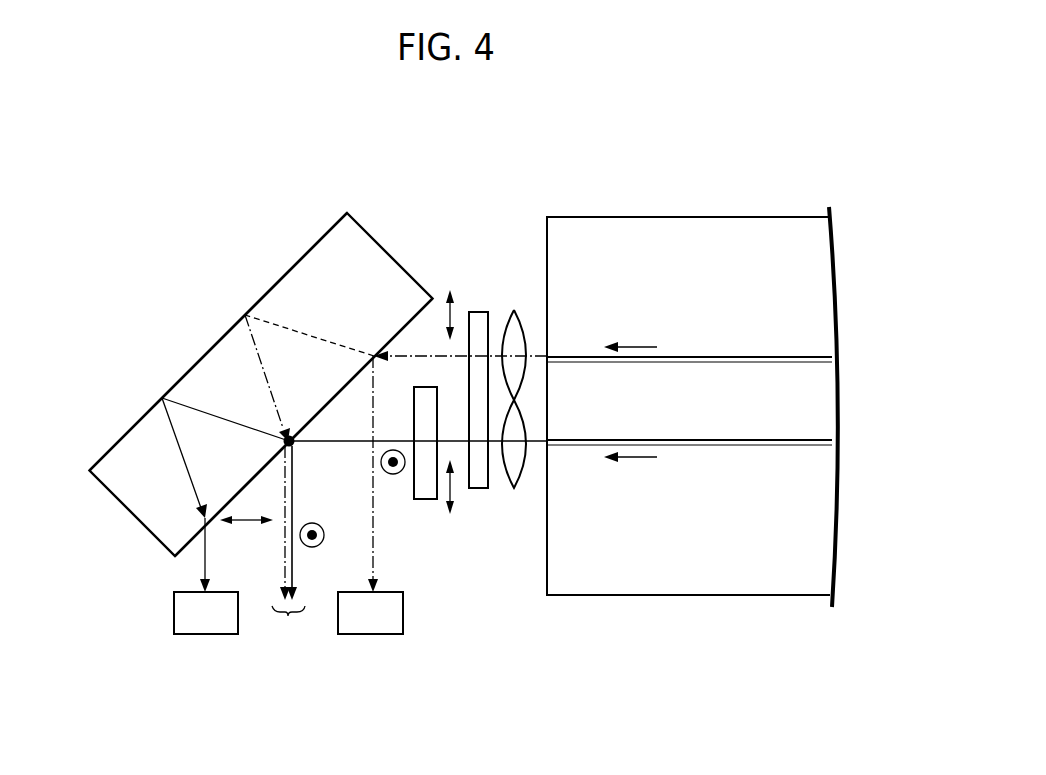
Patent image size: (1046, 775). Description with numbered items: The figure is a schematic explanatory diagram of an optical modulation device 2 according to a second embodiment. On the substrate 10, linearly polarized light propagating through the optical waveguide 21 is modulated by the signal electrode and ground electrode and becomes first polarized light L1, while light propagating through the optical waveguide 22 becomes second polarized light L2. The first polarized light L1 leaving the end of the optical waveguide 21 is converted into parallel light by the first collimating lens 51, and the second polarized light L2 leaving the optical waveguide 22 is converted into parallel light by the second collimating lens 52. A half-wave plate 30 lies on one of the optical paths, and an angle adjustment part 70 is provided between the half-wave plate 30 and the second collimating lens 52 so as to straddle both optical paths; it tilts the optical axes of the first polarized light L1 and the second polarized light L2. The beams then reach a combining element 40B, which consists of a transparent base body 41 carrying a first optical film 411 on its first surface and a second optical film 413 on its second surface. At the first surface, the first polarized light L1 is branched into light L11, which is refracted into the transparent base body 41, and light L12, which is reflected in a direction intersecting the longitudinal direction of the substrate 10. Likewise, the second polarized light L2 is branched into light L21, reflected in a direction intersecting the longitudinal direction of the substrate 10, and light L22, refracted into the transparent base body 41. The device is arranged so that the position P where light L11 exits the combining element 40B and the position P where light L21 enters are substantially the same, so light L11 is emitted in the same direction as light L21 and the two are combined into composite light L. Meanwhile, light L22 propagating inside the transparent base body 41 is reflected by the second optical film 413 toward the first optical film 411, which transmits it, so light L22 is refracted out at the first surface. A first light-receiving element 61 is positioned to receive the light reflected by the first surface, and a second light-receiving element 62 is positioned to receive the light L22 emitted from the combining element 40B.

The optical modulation device 2 is at (821, 154).
The substrate 10 is at (685, 226).
The optical waveguide 21 is at (766, 356).
The optical waveguide 22 is at (727, 447).
The half-wave plate 30 is at (426, 492).
The combining element 40B is at (180, 206).
The transparent base body 41 is at (368, 246).
The first optical film 411 is at (190, 548).
The second optical film 413 is at (186, 388).
The first collimating lens 51 is at (512, 320).
The second collimating lens 52 is at (514, 482).
The first light-receiving element 61 is at (368, 626).
The second light-receiving element 62 is at (204, 626).
The angle adjustment part 70 is at (481, 318).
The first polarized light L1 is at (406, 358).
The second polarized light L2 is at (309, 445).
The light L11 is at (274, 320).
The light L12 is at (370, 562).
The light L21 is at (296, 572).
The light L22 is at (170, 430).
The composite light L is at (288, 630).
The position P is at (296, 438).